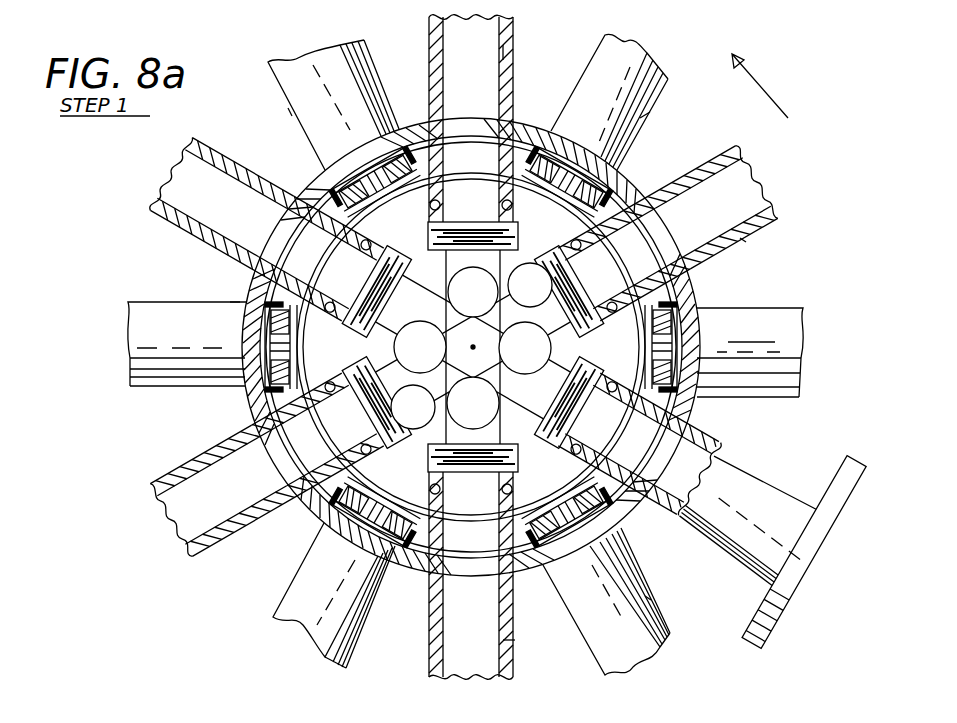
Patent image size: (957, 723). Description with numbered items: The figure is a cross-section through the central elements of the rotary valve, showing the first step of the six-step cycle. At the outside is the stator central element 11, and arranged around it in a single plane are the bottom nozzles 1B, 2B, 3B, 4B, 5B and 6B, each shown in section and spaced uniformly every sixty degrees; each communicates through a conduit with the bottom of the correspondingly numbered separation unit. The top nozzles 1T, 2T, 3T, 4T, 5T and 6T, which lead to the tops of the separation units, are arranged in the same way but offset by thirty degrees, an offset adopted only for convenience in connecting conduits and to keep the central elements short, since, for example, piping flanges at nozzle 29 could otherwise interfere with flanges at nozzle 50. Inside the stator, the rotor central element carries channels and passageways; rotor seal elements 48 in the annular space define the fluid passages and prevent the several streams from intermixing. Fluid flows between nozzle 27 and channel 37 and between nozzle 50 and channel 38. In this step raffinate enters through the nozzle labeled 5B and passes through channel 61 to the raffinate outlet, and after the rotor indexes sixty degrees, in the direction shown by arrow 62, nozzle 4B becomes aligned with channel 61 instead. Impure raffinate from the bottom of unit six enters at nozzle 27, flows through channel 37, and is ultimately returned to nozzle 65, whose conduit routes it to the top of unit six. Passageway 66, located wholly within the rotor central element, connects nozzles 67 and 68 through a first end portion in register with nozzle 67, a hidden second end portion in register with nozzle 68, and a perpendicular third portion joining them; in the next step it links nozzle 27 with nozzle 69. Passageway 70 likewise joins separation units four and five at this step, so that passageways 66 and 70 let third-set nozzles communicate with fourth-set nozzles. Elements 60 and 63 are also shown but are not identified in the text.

The stator central element 11 is at (540, 118).
The nozzle 27 is at (518, 46).
The nozzle 29 is at (644, 602).
The channel 37 is at (486, 303).
The channel 38 is at (486, 414).
The rotor seal element 48 is at (446, 180).
The nozzle 50 is at (517, 641).
The piston 60 is at (345, 275).
The channel 61 is at (434, 358).
The arrow 62 is at (766, 72).
The valve 63 is at (538, 359).
The nozzle 65 is at (231, 302).
The passageway 66 is at (541, 295).
The nozzle 67 is at (744, 239).
The nozzle 68 is at (647, 124).
The nozzle 69 is at (288, 112).
The passageway 70 is at (424, 417).
The nozzle 1T is at (333, 95).
The nozzle 2T is at (616, 100).
The nozzle 3T is at (774, 352).
The nozzle 4T is at (606, 605).
The nozzle 5T is at (325, 600).
The nozzle 6T is at (161, 344).
The nozzle 1B is at (682, 232).
The nozzle 2B is at (693, 488).
The nozzle 3B is at (471, 590).
The nozzle 4B is at (252, 465).
The nozzle 5B is at (253, 228).
The nozzle 6B is at (471, 111).